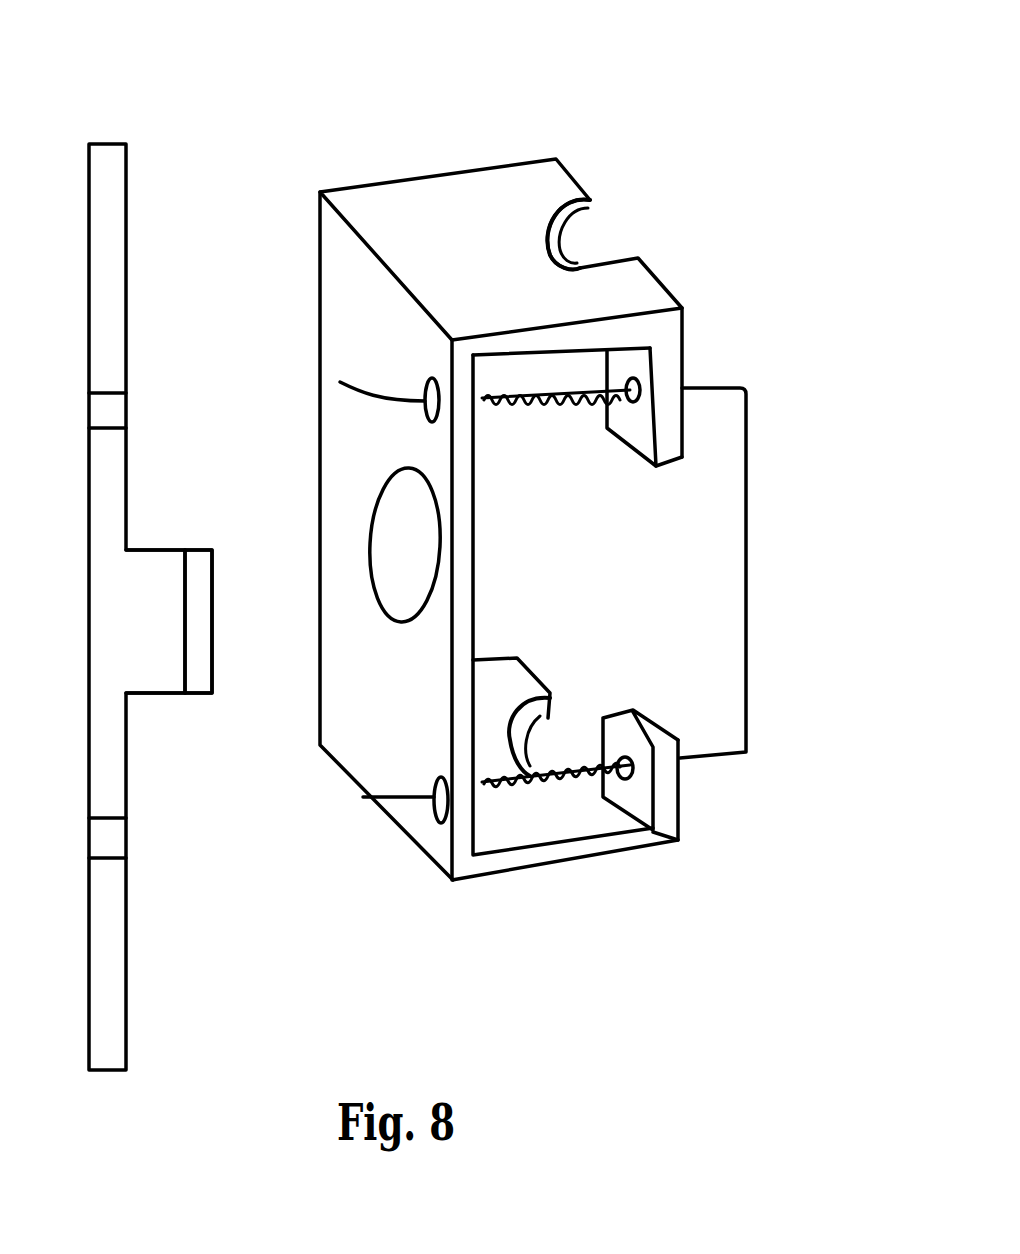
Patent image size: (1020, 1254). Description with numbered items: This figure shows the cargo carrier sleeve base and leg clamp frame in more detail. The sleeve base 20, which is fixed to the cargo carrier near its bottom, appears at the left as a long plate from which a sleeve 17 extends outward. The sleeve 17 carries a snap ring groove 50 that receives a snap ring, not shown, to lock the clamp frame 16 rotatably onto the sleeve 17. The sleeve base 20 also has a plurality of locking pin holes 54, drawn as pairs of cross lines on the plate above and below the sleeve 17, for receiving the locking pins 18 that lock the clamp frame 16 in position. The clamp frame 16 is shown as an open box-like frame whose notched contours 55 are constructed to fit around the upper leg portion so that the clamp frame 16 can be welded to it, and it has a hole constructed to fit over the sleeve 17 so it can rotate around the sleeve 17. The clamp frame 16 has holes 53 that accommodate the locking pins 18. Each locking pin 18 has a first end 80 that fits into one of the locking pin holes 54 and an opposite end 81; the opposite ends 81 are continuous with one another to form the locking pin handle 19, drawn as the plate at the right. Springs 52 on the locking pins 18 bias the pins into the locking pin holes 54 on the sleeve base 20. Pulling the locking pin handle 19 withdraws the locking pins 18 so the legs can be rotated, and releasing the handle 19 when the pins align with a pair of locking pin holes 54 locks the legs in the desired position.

The clamp frame 16 is at (514, 142).
The sleeve 17 is at (148, 545).
The locking pins 18 is at (396, 398).
The locking pin handle 19 is at (746, 552).
The sleeve base 20 is at (115, 140).
The snap ring groove 50 is at (185, 627).
The springs 52 is at (374, 497).
The holes 53 is at (636, 382).
The locking pin holes 54 is at (126, 400).
The contours 55 is at (572, 245).
The first ends 80 is at (370, 840).
The opposite ends 81 is at (722, 384).